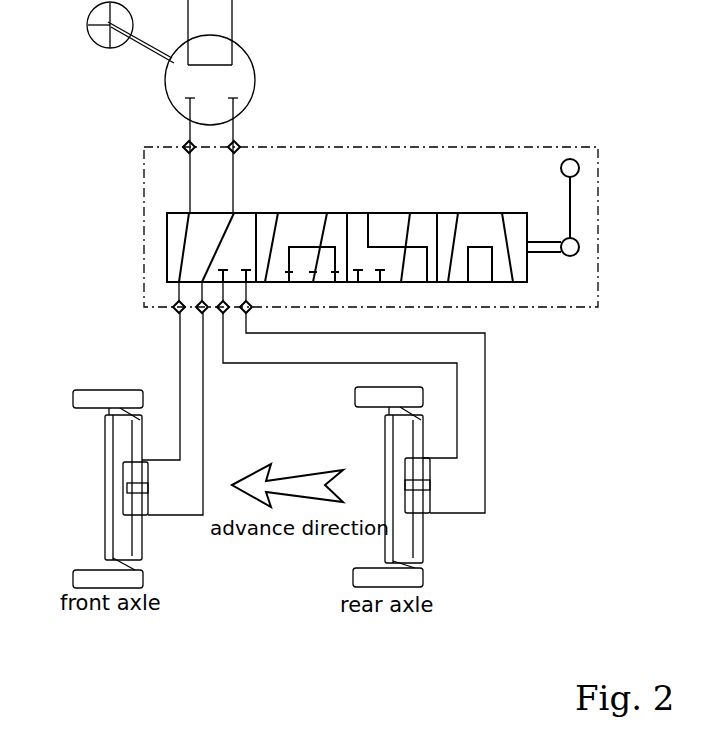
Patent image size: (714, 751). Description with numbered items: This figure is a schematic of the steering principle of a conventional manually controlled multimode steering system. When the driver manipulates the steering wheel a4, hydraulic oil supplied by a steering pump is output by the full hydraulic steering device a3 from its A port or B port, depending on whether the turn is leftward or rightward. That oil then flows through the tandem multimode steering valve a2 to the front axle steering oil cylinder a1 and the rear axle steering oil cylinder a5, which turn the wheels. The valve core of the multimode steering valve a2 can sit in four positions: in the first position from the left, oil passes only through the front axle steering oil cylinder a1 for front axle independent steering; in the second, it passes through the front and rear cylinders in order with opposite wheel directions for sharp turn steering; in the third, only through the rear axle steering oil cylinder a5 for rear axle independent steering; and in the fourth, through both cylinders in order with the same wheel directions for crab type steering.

The front axle steering oil cylinder a1 is at (81, 439).
The tandem multimode steering valve a2 is at (311, 227).
The full hydraulic steering device a3 is at (145, 73).
The steering wheel a4 is at (100, 36).
The rear axle steering oil cylinder a5 is at (465, 487).